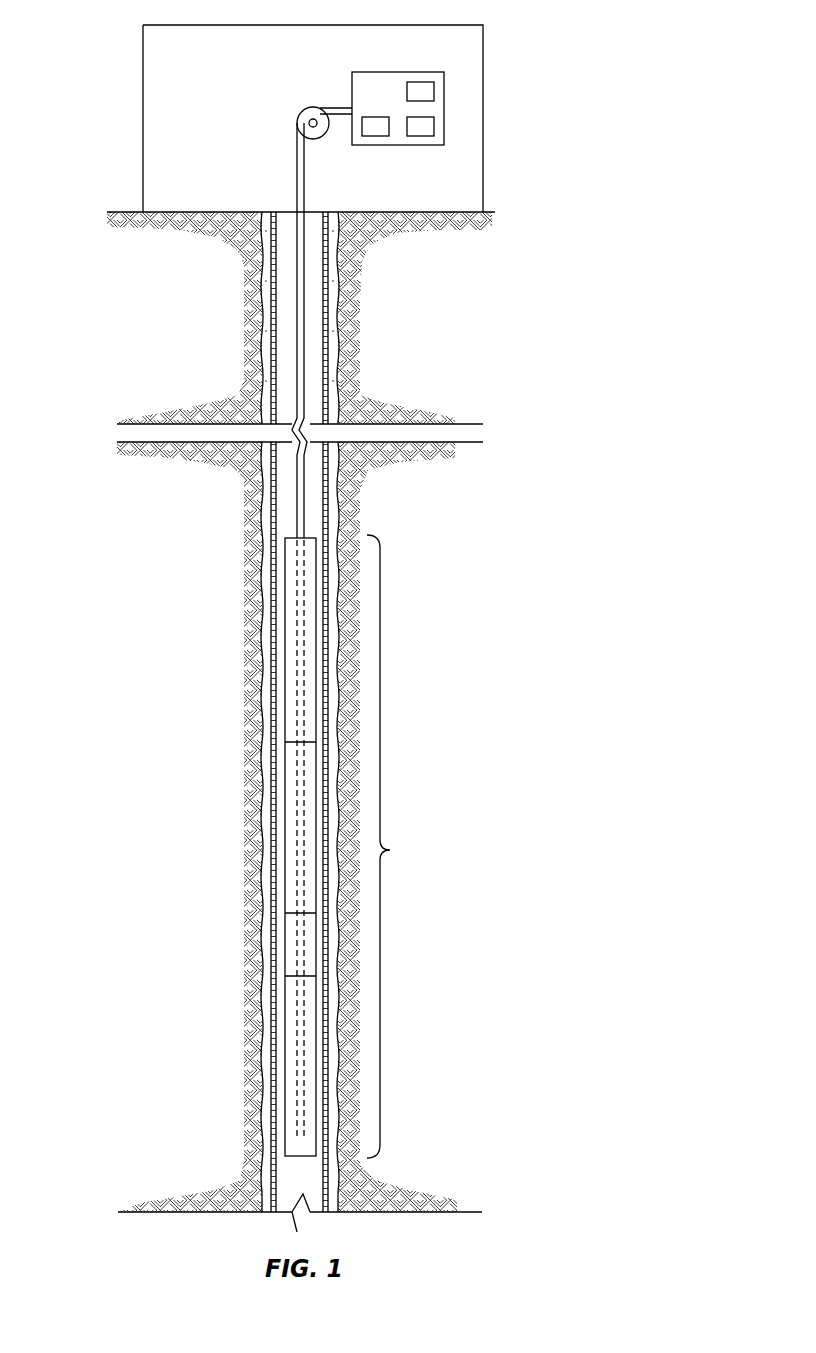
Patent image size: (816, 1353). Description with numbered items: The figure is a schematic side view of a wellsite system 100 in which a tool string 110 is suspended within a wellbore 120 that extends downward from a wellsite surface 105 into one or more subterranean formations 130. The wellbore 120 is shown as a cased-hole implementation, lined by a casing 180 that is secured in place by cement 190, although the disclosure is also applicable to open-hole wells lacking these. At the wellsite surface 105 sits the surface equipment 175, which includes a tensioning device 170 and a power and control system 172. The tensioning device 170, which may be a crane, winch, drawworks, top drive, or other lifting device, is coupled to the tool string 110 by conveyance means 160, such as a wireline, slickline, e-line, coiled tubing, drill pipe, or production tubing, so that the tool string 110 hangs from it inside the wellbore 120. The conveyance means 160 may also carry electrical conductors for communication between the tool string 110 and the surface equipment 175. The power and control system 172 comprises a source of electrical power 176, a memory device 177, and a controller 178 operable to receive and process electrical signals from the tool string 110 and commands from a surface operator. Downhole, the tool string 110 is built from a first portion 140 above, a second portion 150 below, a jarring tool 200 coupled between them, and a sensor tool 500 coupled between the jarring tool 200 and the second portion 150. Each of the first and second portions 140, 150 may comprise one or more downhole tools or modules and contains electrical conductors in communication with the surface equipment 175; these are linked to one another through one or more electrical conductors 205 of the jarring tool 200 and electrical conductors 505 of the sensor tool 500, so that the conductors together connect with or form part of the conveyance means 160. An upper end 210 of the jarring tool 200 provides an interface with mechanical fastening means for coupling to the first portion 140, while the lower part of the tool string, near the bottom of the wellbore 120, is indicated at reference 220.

The wellsite system 100 is at (515, 40).
The wellsite surface 105 is at (142, 211).
The tool string 110 is at (401, 846).
The wellbore 120 is at (320, 1188).
The subterranean formations 130 is at (368, 395).
The first portion 140 is at (285, 617).
The second portion 150 is at (283, 1028).
The conveyance means 160 is at (296, 298).
The tensioning device 170 is at (303, 107).
The power and control system 172 is at (368, 71).
The surface equipment 175 is at (222, 198).
The source of electrical power 176 is at (435, 91).
The memory device 177 is at (435, 126).
The controller 178 is at (377, 137).
The casing 180 is at (275, 259).
The cement 190 is at (267, 341).
The jarring tool 200 is at (283, 823).
The electrical conductor 205 is at (296, 887).
The upper end 210 is at (297, 682).
The lower sensor 220 is at (297, 1091).
The sensor tool 500 is at (283, 932).
The electrical conductor 505 is at (297, 963).